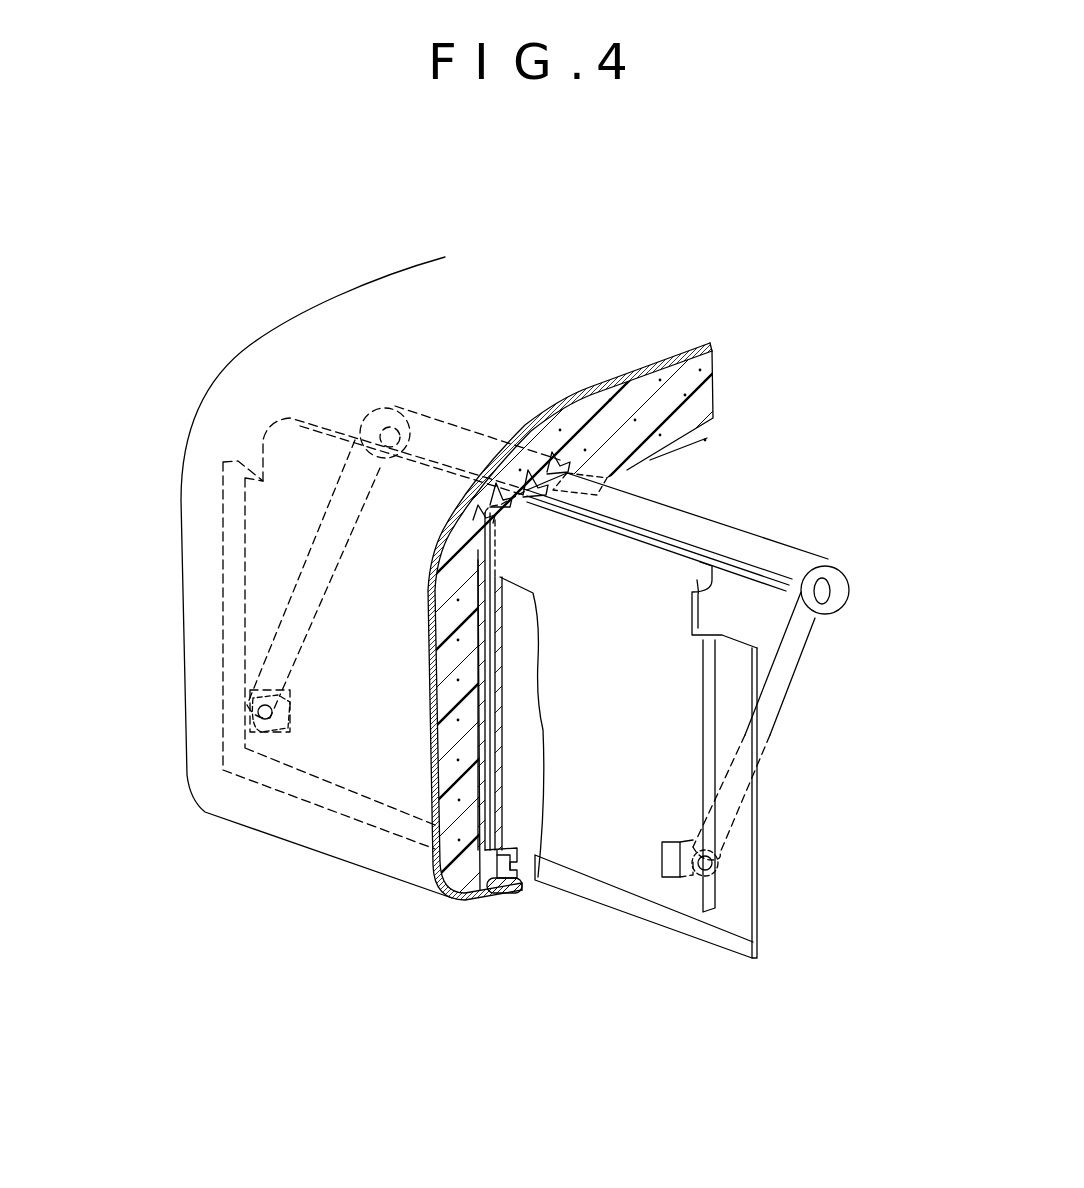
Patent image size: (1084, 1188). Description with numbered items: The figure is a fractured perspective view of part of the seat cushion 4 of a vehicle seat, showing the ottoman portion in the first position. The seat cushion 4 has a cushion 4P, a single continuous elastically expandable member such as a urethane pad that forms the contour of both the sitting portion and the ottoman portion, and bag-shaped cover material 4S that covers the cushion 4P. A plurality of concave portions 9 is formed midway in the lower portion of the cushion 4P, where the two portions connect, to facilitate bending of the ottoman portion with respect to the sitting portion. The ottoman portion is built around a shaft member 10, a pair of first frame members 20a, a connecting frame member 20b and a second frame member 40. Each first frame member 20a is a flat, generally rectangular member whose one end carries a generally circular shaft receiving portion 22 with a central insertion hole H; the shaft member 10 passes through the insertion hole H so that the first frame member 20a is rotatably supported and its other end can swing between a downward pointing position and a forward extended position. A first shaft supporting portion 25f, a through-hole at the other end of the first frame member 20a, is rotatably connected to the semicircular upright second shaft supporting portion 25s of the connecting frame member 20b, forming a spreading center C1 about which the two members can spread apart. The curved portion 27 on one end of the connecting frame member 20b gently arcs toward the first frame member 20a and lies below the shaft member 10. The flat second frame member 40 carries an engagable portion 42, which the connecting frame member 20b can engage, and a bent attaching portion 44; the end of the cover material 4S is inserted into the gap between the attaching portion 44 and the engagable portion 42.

The seat cushion 4 is at (340, 250).
The cushion 4P is at (680, 385).
The cover material 4S is at (692, 352).
The concave portion 9 is at (547, 452).
The curved portion 27 is at (665, 568).
The shaft member 10 is at (830, 580).
The insertion hole H is at (834, 588).
The shaft receiving portion 22 is at (840, 600).
The first frame member 20a is at (797, 668).
The connecting frame member 20b is at (715, 960).
The first shaft supporting portion 25f is at (720, 882).
The second shaft supporting portion 25s is at (260, 720).
The spreading center C1 is at (718, 862).
The second frame member 40 is at (470, 768).
The engagable portion 42 is at (518, 890).
The attaching portion 44 is at (513, 908).